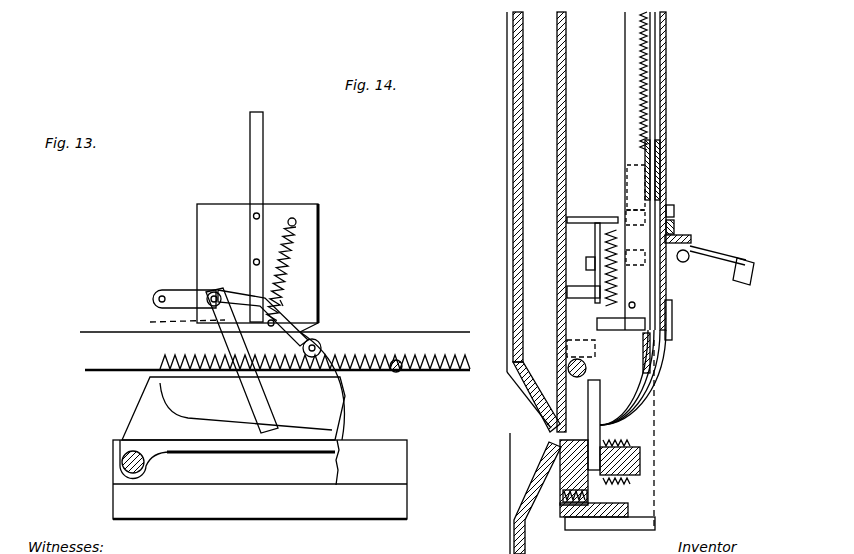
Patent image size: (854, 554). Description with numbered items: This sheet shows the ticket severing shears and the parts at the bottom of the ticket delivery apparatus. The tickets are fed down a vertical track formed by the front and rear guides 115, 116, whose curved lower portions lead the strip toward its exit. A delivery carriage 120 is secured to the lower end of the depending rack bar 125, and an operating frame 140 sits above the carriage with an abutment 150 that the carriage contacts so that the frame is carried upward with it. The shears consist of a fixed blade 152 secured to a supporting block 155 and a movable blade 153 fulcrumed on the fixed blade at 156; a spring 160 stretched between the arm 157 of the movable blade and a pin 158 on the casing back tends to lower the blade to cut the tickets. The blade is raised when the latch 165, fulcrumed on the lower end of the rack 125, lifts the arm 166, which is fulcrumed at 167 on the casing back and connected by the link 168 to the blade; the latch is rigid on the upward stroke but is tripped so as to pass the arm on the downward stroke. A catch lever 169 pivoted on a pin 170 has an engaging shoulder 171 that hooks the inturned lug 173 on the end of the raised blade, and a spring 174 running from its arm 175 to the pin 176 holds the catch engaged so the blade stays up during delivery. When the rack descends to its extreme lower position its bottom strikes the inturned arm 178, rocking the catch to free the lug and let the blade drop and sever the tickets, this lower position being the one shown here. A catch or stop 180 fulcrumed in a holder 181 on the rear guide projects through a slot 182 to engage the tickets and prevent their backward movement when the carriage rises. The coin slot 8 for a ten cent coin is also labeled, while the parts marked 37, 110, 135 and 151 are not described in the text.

In FIG. 14, the coin slot 8 is at (507, 118).
In FIG. 14, the bar 37 is at (566, 132).
In FIG. 14, the tube 110 is at (650, 434).
In FIG. 14, the front guide 115 is at (653, 33).
In FIG. 14, the rear guide 116 is at (663, 57).
In FIG. 14, the delivery carriage 120 is at (673, 212).
In FIG. 13, the rack bar 125 is at (258, 143).
In FIG. 14, the rack bar 125 is at (628, 417).
In FIG. 14, the rack 135 is at (628, 90).
In FIG. 14, the operating frame 140 is at (645, 167).
In FIG. 14, the abutment 150 is at (557, 458).
In FIG. 14, the spring 151 is at (587, 438).
In FIG. 13, the fixed blade 152 is at (315, 472).
In FIG. 13, the movable blade 153 is at (213, 428).
In FIG. 14, the movable blade 153 is at (575, 440).
In FIG. 13, the supporting block 155 is at (340, 467).
In FIG. 14, the supporting block 155 is at (633, 460).
In FIG. 13, the fulcrum 156 is at (121, 462).
In FIG. 13, the arm 157 is at (152, 378).
In FIG. 14, the arm 157 is at (575, 366).
In FIG. 13, the pin 158 is at (402, 363).
In FIG. 14, the pin 158 is at (555, 477).
In FIG. 13, the spring 160 is at (367, 358).
In FIG. 13, the latch 165 is at (280, 305).
In FIG. 14, the latch 165 is at (637, 313).
In FIG. 13, the arm 166 is at (208, 292).
In FIG. 14, the arm 166 is at (595, 244).
In FIG. 13, the fulcrum 167 is at (162, 288).
In FIG. 14, the fulcrum 167 is at (570, 290).
In FIG. 13, the link 168 is at (230, 337).
In FIG. 14, the link 168 is at (586, 266).
In FIG. 13, the catch lever 169 is at (343, 412).
In FIG. 14, the catch lever 169 is at (635, 408).
In FIG. 13, the pin 170 is at (303, 340).
In FIG. 14, the pin 170 is at (652, 358).
In FIG. 13, the engaging shoulder 171 is at (333, 393).
In FIG. 14, the inturned lug 173 is at (645, 392).
In FIG. 13, the spring 174 is at (284, 272).
In FIG. 14, the spring 174 is at (604, 237).
In FIG. 13, the arm 175 is at (275, 322).
In FIG. 13, the pin 176 is at (295, 222).
In FIG. 14, the pin 176 is at (586, 217).
In FIG. 13, the inturned arm 178 is at (172, 317).
In FIG. 14, the inturned arm 178 is at (607, 330).
In FIG. 13, the catch or stop 180 is at (307, 246).
In FIG. 14, the catch or stop 180 is at (692, 250).
In FIG. 14, the holder 181 is at (673, 228).
In FIG. 14, the slot 182 is at (664, 272).